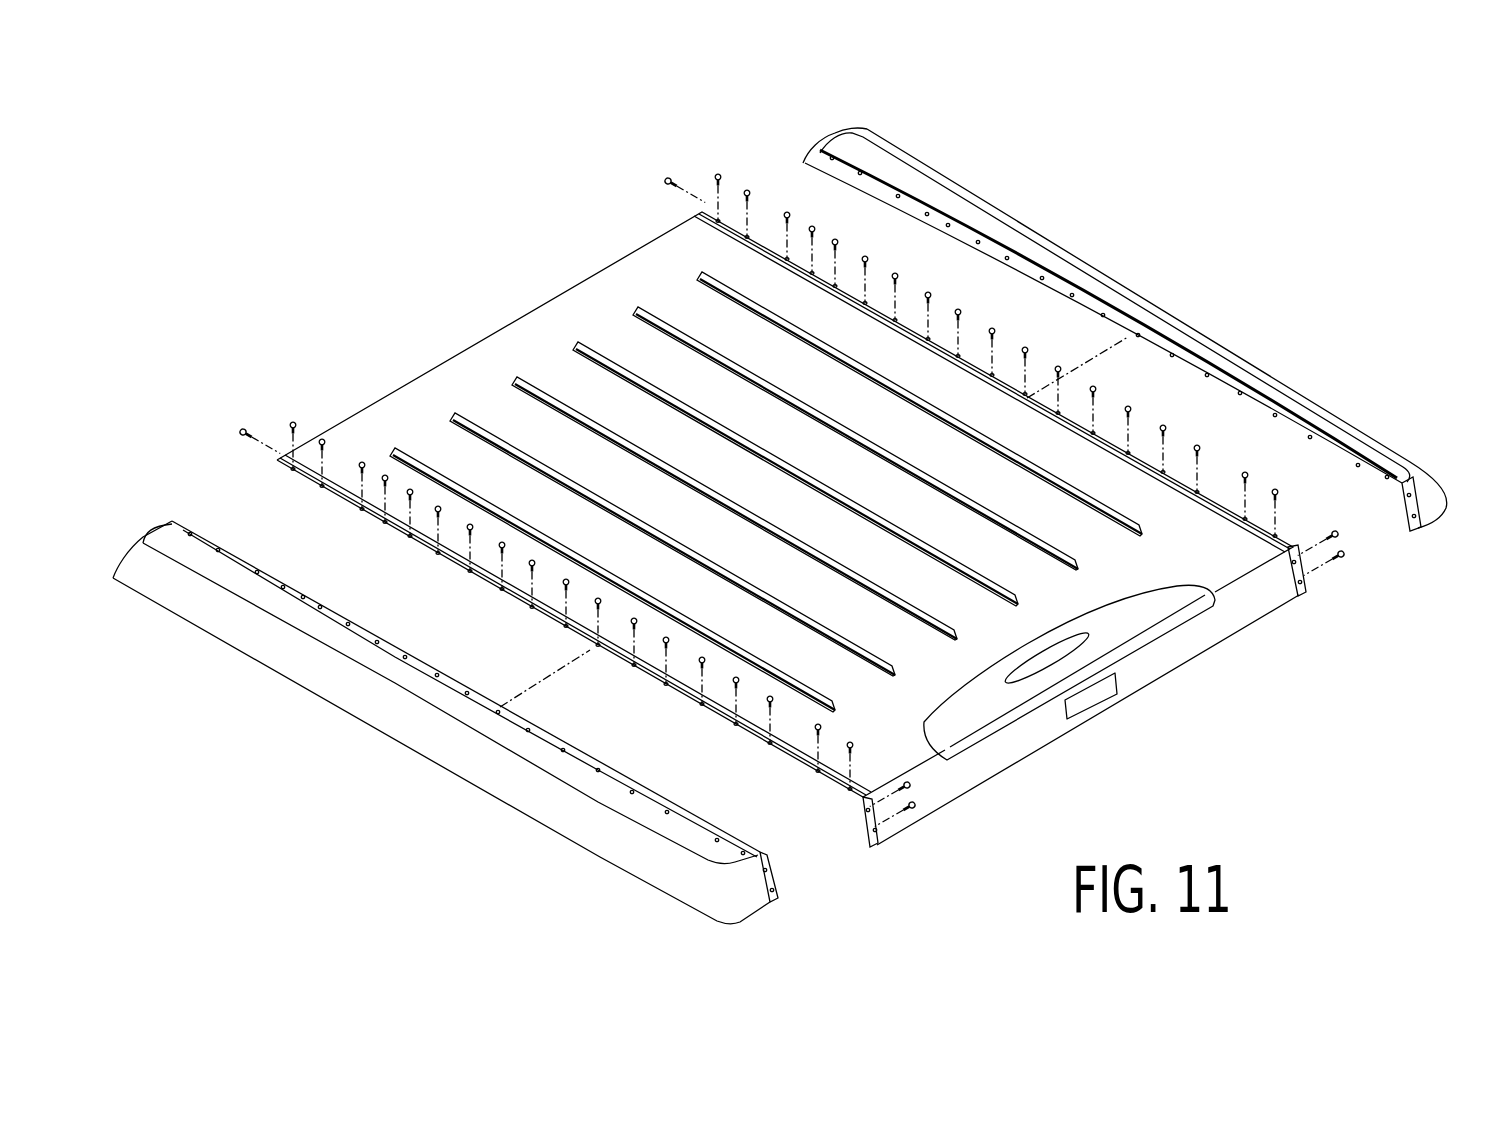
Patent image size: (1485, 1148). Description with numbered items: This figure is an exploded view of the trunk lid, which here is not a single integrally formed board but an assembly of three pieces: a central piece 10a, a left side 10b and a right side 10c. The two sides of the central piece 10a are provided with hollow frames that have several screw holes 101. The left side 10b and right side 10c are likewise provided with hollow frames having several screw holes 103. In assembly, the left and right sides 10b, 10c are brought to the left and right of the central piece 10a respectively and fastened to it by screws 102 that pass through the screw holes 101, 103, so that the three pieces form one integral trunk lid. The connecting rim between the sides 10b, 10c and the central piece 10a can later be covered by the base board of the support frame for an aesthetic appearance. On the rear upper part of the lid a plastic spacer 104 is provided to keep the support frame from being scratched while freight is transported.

The central piece 10a is at (488, 358).
The left side 10b is at (355, 695).
The right side 10c is at (1097, 290).
The screw holes 101 is at (786, 260).
The screws 102 is at (716, 176).
The screw holes 103 is at (860, 170).
The plastic spacer 104 is at (1157, 636).